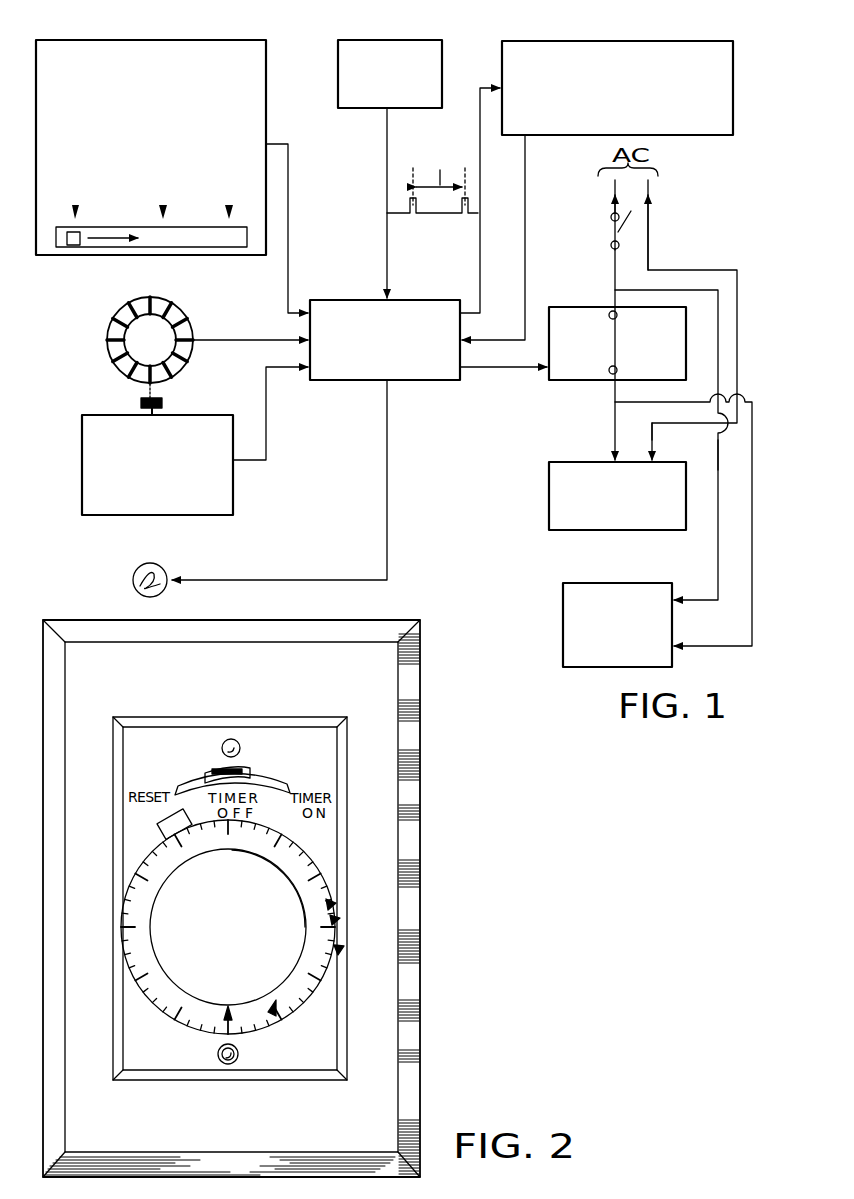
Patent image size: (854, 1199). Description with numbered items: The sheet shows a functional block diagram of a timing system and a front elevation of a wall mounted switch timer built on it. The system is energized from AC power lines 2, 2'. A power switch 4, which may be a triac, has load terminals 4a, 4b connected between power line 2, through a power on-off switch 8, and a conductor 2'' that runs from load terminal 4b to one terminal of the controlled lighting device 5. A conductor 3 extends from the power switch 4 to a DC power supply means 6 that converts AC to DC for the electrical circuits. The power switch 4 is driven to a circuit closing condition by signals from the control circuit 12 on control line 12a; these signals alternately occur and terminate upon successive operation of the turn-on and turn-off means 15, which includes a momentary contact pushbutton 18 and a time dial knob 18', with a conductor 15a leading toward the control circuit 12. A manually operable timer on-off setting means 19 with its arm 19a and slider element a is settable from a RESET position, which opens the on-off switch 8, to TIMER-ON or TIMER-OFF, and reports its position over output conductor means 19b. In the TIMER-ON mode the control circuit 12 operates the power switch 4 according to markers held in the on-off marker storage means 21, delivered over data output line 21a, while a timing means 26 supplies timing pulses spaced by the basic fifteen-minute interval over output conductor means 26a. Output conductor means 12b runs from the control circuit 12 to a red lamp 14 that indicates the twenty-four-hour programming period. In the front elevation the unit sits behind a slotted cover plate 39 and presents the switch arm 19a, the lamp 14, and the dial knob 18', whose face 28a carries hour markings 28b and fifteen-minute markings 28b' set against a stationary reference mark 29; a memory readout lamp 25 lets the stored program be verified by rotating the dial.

In FIG. 1, the timer on-off setting means 19 is at (130, 40).
In FIG. 1, the slider knob a is at (73, 246).
In FIG. 1, the output conductor means 19b is at (288, 144).
In FIG. 1, the timing means 26 is at (375, 40).
In FIG. 1, the output conductor means 26a is at (387, 213).
In FIG. 1, the on-off marker storage means 21 is at (652, 41).
In FIG. 1, the data output line 21a is at (525, 237).
In FIG. 1, the control circuit 12 is at (400, 300).
In FIG. 1, the control line 12a is at (515, 367).
In FIG. 1, the control circuit output conductor means 12b is at (352, 580).
In FIG. 1, the AC power line 2 is at (592, 215).
In FIG. 1, the AC power line 2' is at (692, 320).
In FIG. 1, the conductor 2'' is at (602, 431).
In FIG. 1, the power on-off switch 8 is at (618, 228).
In FIG. 1, the power switch 4 is at (560, 307).
In FIG. 1, the load terminal 4a is at (610, 311).
In FIG. 1, the load terminal 4b is at (610, 374).
In FIG. 1, the lighting device 5 is at (560, 462).
In FIG. 1, the conductor 3 is at (718, 470).
In FIG. 1, the DC power supply means 6 is at (563, 603).
In FIG. 1, the time dial knob 18' is at (207, 334).
In FIG. 2, the time dial knob 18' is at (295, 921).
In FIG. 1, the momentary contact pushbutton 18 is at (111, 395).
In FIG. 1, the turn-on and turn-off means 15 is at (82, 447).
In FIG. 1, the turn on/off means output line 15a is at (266, 460).
In FIG. 1, the lamp 14 is at (133, 580).
In FIG. 2, the lamp 14 is at (238, 740).
In FIG. 2, the slotted cover plate 39 is at (377, 692).
In FIG. 2, the manually operable arm 19a is at (205, 776).
In FIG. 2, the stationary reference mark 29 is at (244, 819).
In FIG. 2, the inner dial disk 28a is at (273, 903).
In FIG. 2, the hour markings 28b is at (246, 987).
In FIG. 2, the 15-minute markings 28b' is at (420, 927).
In FIG. 2, the memory readout lamp 25 is at (240, 1059).